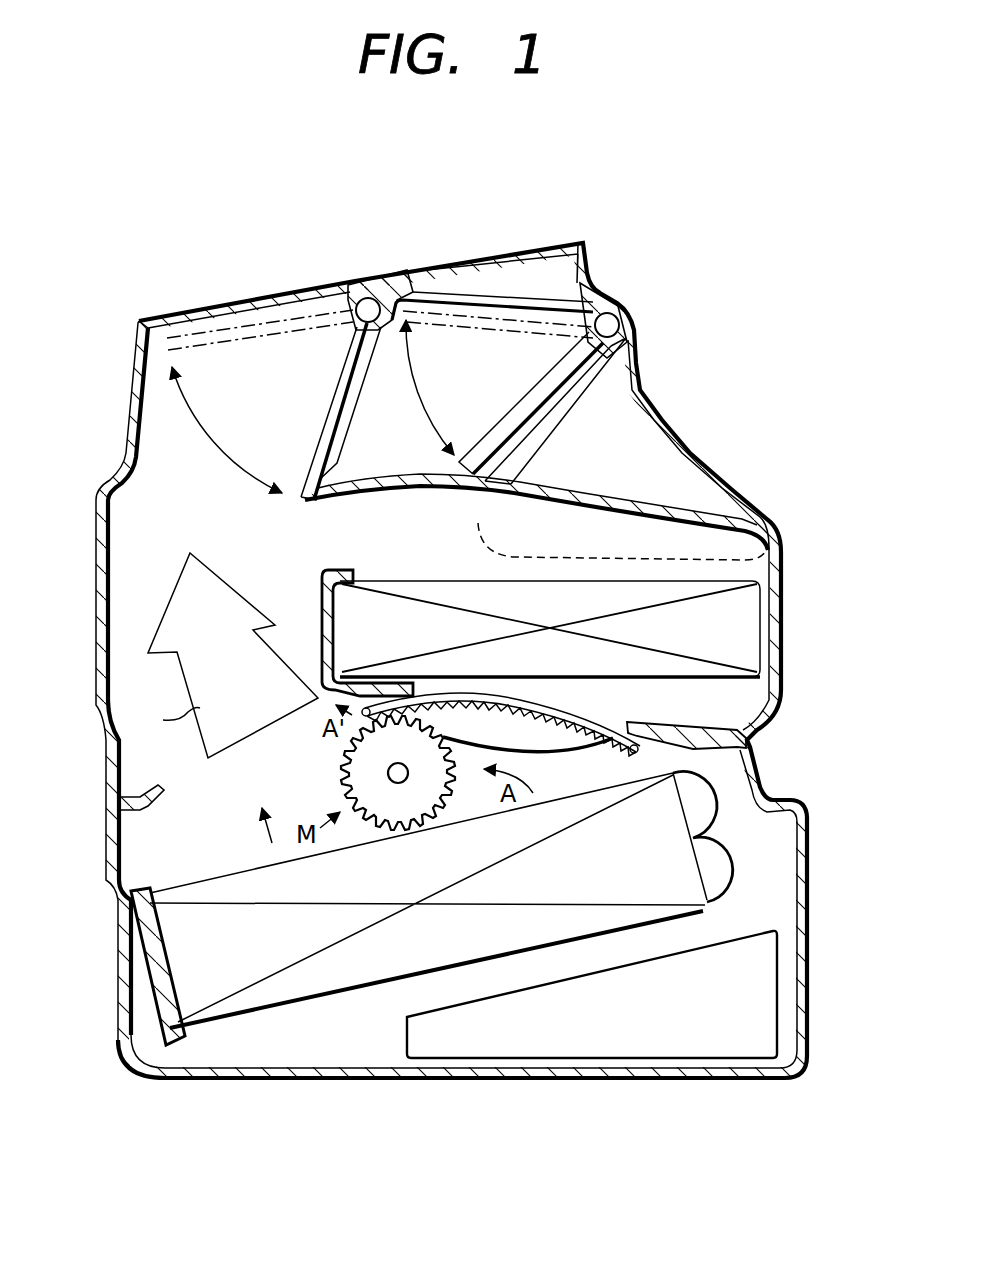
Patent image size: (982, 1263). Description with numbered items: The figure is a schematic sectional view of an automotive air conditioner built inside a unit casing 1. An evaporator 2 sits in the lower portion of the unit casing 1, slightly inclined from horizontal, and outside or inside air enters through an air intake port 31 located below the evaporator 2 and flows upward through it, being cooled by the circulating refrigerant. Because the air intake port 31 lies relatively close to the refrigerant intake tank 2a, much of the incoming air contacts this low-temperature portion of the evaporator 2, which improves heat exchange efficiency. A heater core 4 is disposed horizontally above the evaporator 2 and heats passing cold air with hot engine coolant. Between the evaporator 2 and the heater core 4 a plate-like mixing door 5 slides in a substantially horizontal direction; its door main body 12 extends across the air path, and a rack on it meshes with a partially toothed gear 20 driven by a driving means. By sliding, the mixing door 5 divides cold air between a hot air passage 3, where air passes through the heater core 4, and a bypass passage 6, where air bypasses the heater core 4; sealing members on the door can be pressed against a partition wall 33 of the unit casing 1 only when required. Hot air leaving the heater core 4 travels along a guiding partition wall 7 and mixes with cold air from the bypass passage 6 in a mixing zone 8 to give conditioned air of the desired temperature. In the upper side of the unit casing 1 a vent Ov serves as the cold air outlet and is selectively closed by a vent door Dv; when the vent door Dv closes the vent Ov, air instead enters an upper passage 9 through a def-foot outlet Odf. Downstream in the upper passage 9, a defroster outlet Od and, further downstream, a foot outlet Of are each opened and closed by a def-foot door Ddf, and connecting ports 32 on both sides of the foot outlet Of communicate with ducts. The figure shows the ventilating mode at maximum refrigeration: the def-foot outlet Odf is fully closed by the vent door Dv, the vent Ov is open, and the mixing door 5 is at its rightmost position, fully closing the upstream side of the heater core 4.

The unit casing 1 is at (112, 782).
The evaporator 2 is at (175, 967).
The refrigerant intake tank 2a is at (723, 877).
The hot air passage 3 is at (536, 512).
The heater core 4 is at (740, 633).
The mixing door 5 is at (578, 714).
The bypass passage 6 is at (349, 633).
The guiding partition wall 7 is at (577, 508).
The mixing zone 8 is at (231, 640).
The upper passage 9 is at (397, 418).
The door main body 12 is at (544, 746).
The partially toothed gear 20 is at (349, 764).
The air intake port 31 is at (757, 1005).
The connecting ports 32 is at (667, 457).
The partition wall 33 is at (660, 732).
The vent Ov is at (170, 318).
The defroster outlet Od is at (418, 297).
The foot outlet Of is at (605, 366).
The vent door Dv is at (338, 392).
The def-foot door Ddf is at (545, 384).
The def-foot outlet Odf is at (336, 465).